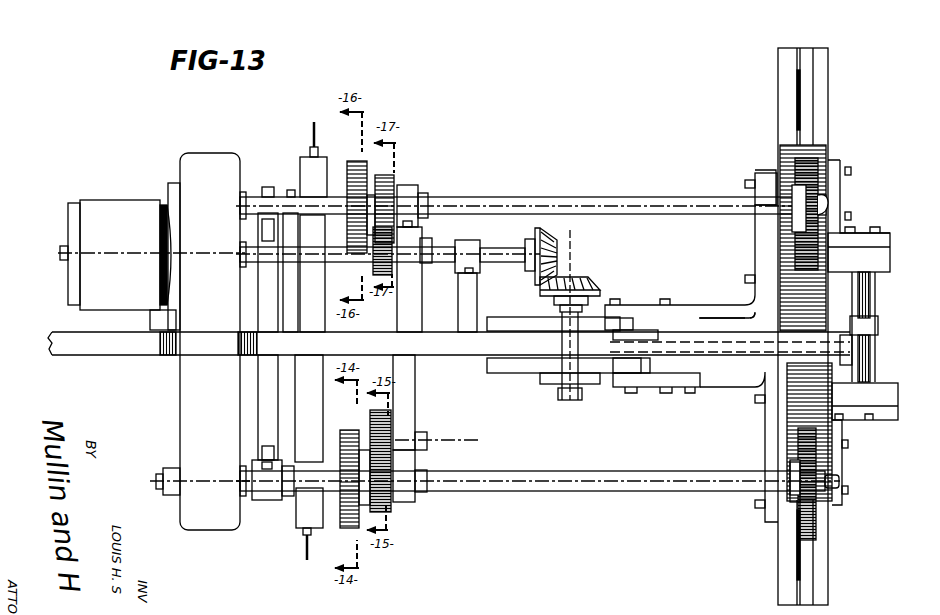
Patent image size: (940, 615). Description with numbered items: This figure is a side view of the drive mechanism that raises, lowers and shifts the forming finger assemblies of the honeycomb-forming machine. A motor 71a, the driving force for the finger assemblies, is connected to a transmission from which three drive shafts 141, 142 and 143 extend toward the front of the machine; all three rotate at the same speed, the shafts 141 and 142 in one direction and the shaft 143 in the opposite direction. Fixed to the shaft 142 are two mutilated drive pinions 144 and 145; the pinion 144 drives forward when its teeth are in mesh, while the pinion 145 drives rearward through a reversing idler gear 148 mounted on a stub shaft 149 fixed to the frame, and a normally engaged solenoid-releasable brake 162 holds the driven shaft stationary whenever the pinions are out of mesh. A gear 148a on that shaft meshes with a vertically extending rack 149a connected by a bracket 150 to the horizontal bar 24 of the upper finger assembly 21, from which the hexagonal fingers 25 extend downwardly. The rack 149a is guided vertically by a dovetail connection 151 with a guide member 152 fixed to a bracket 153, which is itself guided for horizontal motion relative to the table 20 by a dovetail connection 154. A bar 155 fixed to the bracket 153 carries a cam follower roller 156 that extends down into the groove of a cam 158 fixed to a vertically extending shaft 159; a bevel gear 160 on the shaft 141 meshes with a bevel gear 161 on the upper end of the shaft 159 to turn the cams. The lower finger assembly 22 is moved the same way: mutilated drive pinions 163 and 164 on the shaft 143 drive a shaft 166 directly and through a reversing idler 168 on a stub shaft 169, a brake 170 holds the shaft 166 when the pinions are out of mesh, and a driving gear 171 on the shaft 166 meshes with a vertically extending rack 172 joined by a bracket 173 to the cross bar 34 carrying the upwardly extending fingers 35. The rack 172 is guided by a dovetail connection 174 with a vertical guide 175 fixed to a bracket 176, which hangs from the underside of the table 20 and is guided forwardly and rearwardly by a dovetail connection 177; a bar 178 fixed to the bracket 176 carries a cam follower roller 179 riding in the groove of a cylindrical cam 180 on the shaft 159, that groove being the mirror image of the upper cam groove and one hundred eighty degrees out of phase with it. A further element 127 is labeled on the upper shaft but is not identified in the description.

The motor 71a is at (112, 200).
The table 20 is at (448, 354).
The drive shaft 142 is at (270, 196).
The stub shaft 149 is at (430, 244).
The brake 162 is at (304, 156).
The mutilated drive pinion 144 is at (356, 170).
The mutilated drive pinion 145 is at (392, 186).
The reversing idler gear 148 is at (373, 267).
The drive shaft 141 is at (505, 253).
The bevel gear 160 is at (546, 243).
The bevel gear 161 is at (582, 280).
The vertically extending shaft 159 is at (570, 397).
The cam 158 is at (520, 314).
The cylindrical cam 180 is at (516, 374).
The bar 155 is at (640, 308).
The cam follower roller 156 is at (612, 318).
The dovetail connection 154 is at (670, 338).
The bracket 153 is at (724, 316).
The bar 178 is at (650, 388).
The cam follower roller 179 is at (632, 372).
The dovetail connection 177 is at (684, 350).
The bracket 176 is at (764, 372).
The shaft 127 is at (551, 201).
The guide member 152 is at (836, 36).
The dovetail connection 151 is at (800, 93).
The dovetail connection 174 is at (810, 564).
The vertical guide 175 is at (826, 594).
The rack 149a is at (828, 148).
The gear 148a is at (812, 172).
The bracket 150 is at (866, 232).
The upper finger assembly 21 is at (878, 250).
The bar 24 is at (881, 266).
The hexagonal fingers 25 is at (864, 296).
The hexagonal fingers 35 is at (878, 362).
The bar 34 is at (894, 396).
The lower finger assembly 22 is at (896, 408).
The rack 172 is at (788, 424).
The driving gear 171 is at (796, 526).
The bracket 173 is at (842, 459).
The shaft 166 is at (608, 490).
The drive shaft 143 is at (270, 492).
The brake 170 is at (298, 520).
The mutilated drive pinion 163 is at (352, 518).
The mutilated drive pinion 164 is at (386, 510).
The reversing idler 168 is at (368, 419).
The stub shaft 169 is at (428, 440).